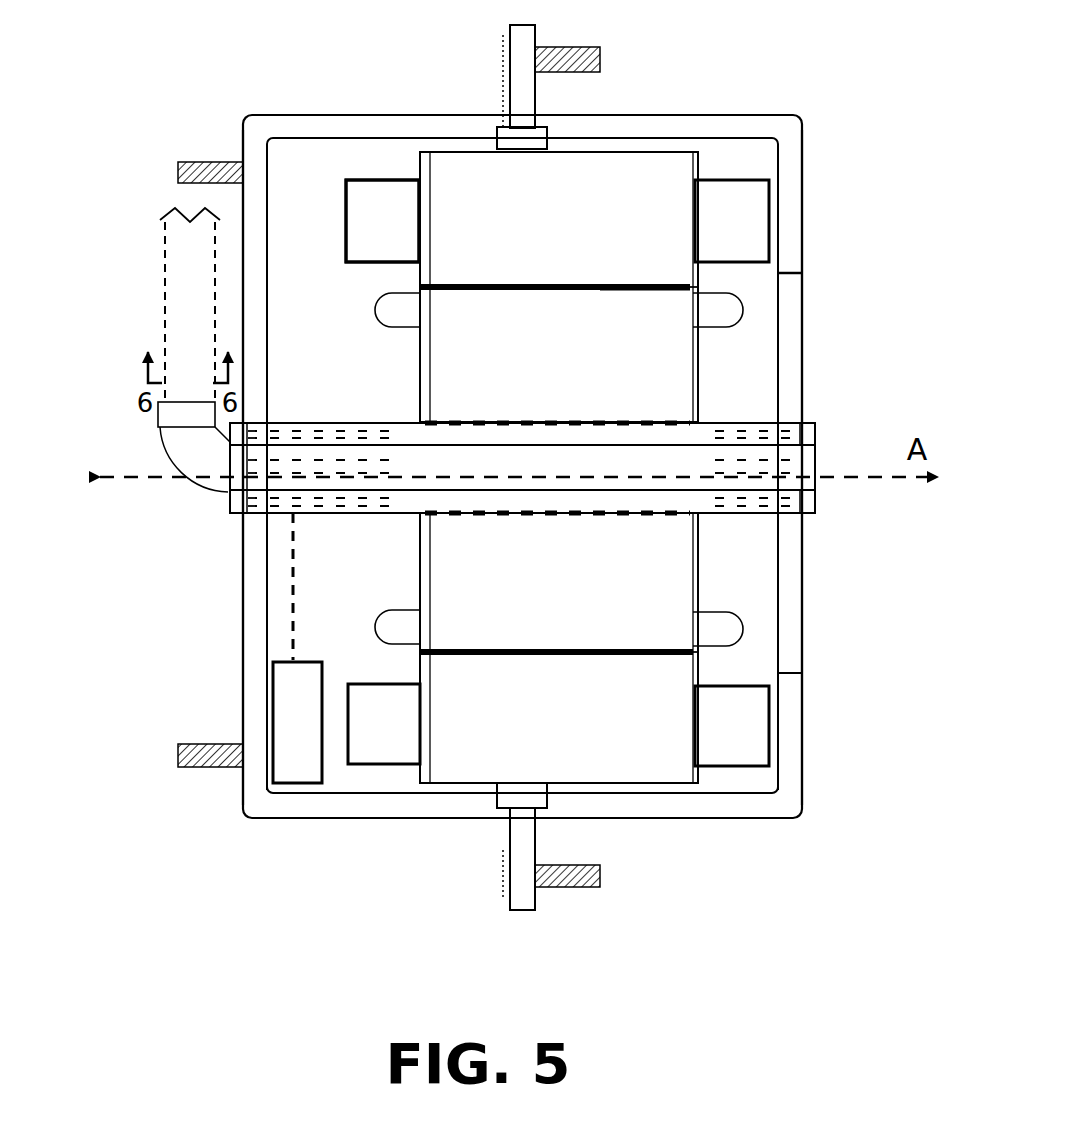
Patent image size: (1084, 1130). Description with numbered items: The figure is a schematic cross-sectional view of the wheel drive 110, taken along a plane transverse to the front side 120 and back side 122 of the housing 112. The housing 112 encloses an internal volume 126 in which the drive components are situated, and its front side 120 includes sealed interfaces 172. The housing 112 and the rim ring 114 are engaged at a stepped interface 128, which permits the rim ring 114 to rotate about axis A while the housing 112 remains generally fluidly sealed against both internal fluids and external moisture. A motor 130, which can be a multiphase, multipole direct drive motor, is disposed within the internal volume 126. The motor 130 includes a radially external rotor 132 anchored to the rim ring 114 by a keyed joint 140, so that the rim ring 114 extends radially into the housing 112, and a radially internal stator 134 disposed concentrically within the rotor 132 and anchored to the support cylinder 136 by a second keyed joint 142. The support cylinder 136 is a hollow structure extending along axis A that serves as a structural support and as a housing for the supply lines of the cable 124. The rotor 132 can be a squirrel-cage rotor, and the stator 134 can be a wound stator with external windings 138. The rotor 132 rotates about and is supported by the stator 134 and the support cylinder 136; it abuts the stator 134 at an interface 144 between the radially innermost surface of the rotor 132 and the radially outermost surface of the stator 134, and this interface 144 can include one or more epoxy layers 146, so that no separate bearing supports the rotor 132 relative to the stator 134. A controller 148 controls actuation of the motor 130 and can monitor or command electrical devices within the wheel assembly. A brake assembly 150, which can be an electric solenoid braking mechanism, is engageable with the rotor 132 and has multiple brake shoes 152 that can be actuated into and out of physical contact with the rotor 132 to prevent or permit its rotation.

The wheel drive 110 is at (860, 198).
The housing 112 is at (797, 778).
The rim ring 114 is at (522, 870).
The front side 120 is at (806, 353).
The back side 122 is at (240, 614).
The cable 124 is at (180, 309).
The internal volume 126 is at (311, 391).
The stepped interface 128 is at (547, 807).
The motor 130 is at (708, 603).
The rotor 132 is at (528, 229).
The stator 134 is at (528, 372).
The support cylinder 136 is at (706, 432).
The external windings 138 is at (735, 634).
The keyed joint 140 is at (508, 782).
The keyed joint 142 is at (483, 519).
The interface 144 is at (608, 296).
The epoxy layers 146 is at (468, 284).
The controller 148 is at (312, 695).
The brake assembly 150 is at (352, 172).
The brake shoes 152 is at (355, 236).
The sealed interfaces 172 is at (784, 275).